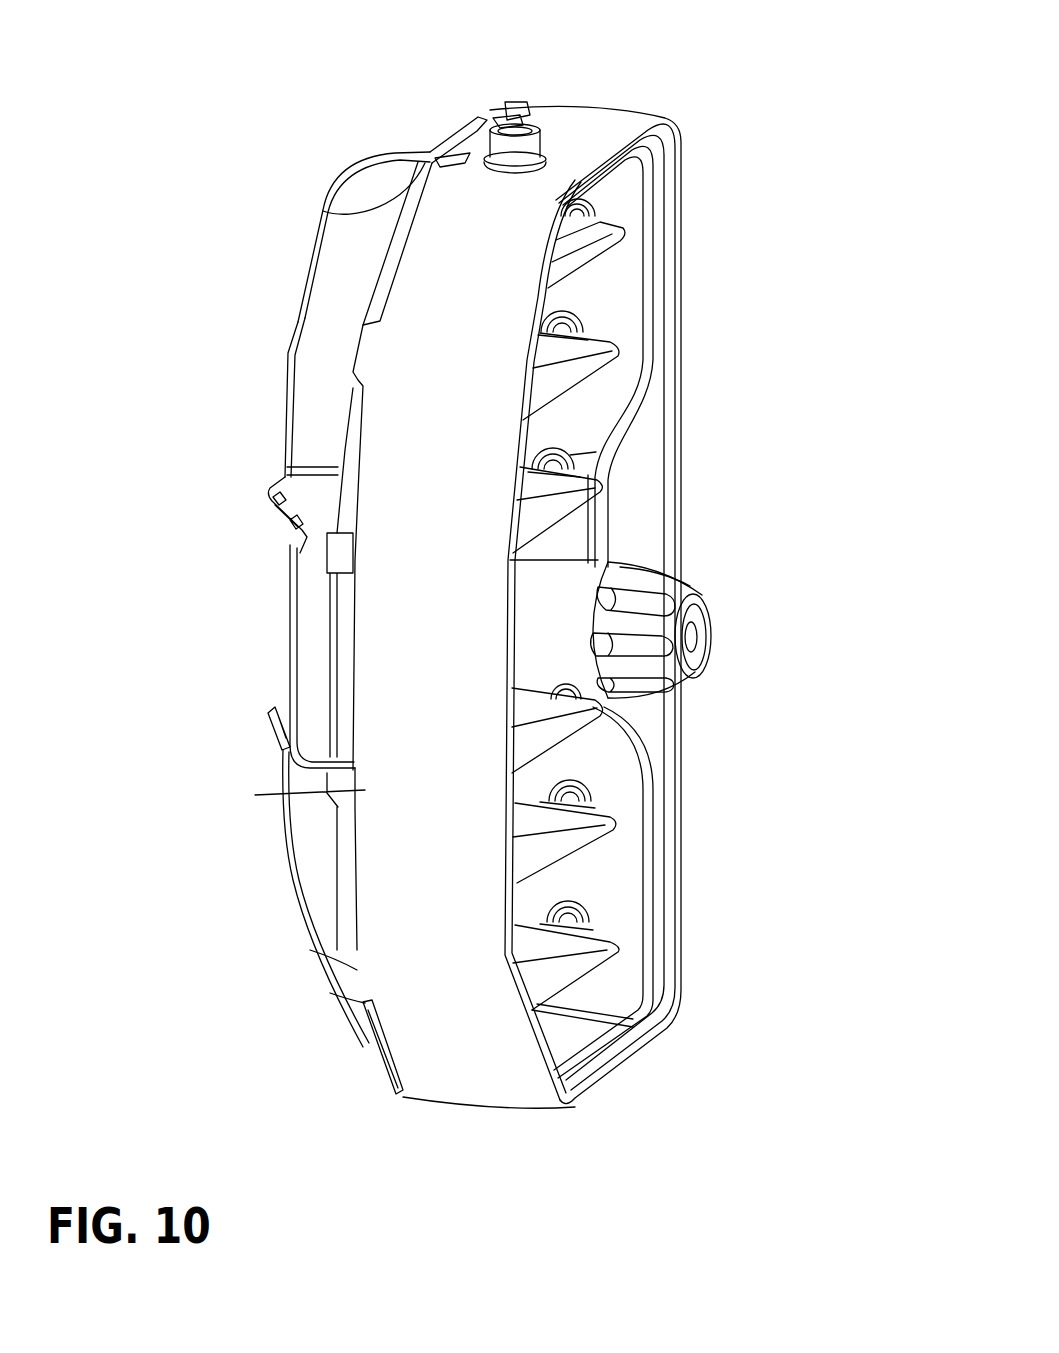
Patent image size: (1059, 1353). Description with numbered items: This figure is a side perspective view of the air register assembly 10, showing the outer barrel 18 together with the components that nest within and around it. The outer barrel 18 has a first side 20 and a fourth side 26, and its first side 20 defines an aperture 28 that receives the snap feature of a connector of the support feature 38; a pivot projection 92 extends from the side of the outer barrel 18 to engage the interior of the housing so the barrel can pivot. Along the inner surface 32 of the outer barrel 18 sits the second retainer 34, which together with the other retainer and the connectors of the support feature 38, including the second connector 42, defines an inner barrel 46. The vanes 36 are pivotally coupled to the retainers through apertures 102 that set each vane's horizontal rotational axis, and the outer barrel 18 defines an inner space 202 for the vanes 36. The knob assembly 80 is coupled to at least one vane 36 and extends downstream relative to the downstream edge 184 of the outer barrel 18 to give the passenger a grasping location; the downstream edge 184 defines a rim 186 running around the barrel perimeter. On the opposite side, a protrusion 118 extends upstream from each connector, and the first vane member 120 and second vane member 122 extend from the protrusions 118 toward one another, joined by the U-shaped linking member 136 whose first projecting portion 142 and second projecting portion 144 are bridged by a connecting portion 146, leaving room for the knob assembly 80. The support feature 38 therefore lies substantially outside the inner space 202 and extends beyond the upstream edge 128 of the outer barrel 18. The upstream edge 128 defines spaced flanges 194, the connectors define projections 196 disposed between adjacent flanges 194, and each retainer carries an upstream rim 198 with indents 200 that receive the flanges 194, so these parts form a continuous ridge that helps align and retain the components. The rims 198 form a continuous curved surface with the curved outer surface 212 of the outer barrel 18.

The air register assembly 10 is at (772, 79).
The outer barrel 18 is at (682, 158).
The first side 20 is at (569, 130).
The fourth side 26 is at (680, 423).
The aperture 28 is at (505, 115).
The inner surface 32 is at (638, 507).
The second retainer 34 is at (625, 312).
The vanes 36 is at (572, 193).
The support feature 38 is at (266, 311).
The second connector 42 is at (562, 1043).
The inner barrel 46 is at (660, 234).
The knob assembly 80 is at (700, 622).
The pivot projections 92 is at (532, 128).
The apertures 102 is at (602, 215).
The protrusion 118 is at (365, 160).
The first vane member 120 is at (313, 290).
The second vane member 122 is at (317, 860).
The upstream edge 128 is at (357, 967).
The linking member 136 is at (293, 682).
The first projecting portion 142 is at (293, 500).
The second projecting portion 144 is at (270, 727).
The connecting portion 146 is at (308, 650).
The downstream edge 184 is at (672, 990).
The rim 186 is at (627, 1043).
The flanges 194 is at (478, 122).
The projections 196 is at (447, 148).
The upstream rim 198 is at (350, 455).
The indents 200 is at (353, 388).
The inner space 202 is at (560, 540).
The outer surface 212 is at (363, 790).